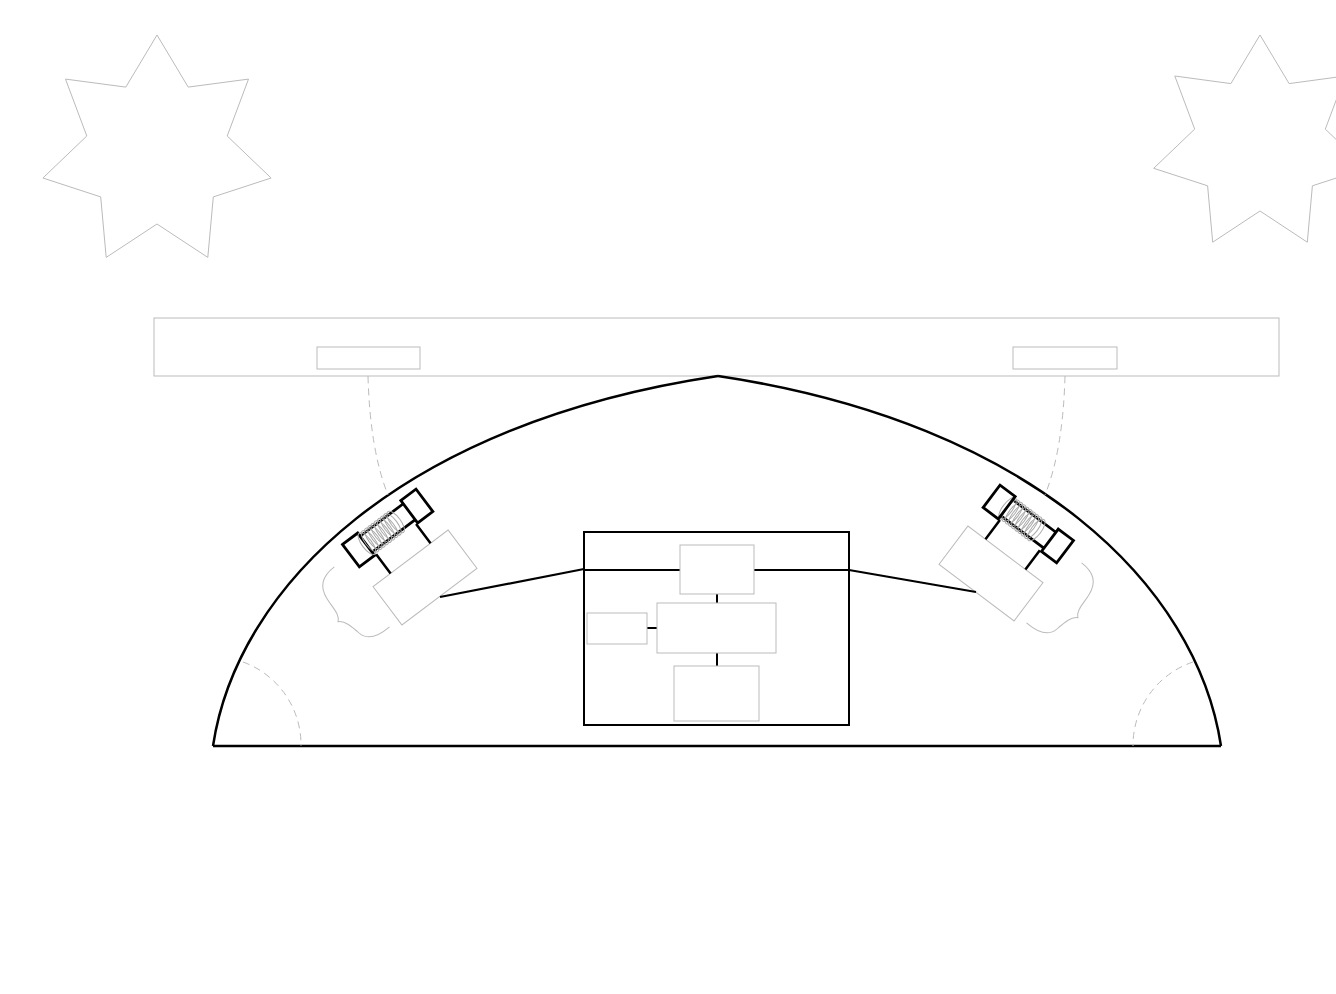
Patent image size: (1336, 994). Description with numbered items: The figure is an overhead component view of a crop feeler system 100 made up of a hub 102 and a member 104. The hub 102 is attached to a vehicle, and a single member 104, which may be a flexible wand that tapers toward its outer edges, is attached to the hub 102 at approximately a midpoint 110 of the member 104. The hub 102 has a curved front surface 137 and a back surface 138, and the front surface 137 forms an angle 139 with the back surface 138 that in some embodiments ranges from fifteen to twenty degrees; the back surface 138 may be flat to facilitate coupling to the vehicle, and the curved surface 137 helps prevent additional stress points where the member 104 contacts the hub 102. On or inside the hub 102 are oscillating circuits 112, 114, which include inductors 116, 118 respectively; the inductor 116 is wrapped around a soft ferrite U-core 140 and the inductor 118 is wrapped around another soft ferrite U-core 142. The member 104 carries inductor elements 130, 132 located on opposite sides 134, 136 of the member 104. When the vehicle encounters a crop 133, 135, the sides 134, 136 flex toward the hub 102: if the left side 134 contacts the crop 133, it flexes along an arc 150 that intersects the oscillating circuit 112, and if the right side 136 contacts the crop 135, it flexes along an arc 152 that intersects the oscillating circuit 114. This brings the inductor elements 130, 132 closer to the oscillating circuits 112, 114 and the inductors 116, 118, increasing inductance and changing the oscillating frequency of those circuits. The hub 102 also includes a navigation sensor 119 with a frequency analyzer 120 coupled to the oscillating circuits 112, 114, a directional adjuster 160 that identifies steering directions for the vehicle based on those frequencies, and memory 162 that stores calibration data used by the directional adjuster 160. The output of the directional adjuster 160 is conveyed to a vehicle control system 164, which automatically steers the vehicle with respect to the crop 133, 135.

The crop feeler system 100 is at (682, 137).
The hub 102 is at (724, 590).
The member 104 is at (811, 367).
The midpoint 110 is at (716, 317).
The oscillating circuit 112 is at (390, 572).
The oscillating circuit 114 is at (1027, 573).
The inductor 116 is at (380, 534).
The inductor 118 is at (1034, 528).
The navigation sensor 119 is at (716, 604).
The frequency analyzer 120 is at (697, 582).
The inductor element 130 is at (412, 358).
The inductor element 132 is at (1110, 358).
The crop 133 is at (136, 157).
The left side 134 is at (231, 306).
The crop 135 is at (1241, 157).
The right side 136 is at (1175, 305).
The curved front surface 137 is at (297, 573).
The back surface 138 is at (998, 746).
The angle 139 is at (255, 660).
The soft ferrite U-core 140 is at (448, 498).
The soft ferrite U-core 142 is at (963, 491).
The arc 150 is at (372, 433).
The arc 152 is at (1063, 438).
The directional adjuster 160 is at (697, 641).
The memory 162 is at (597, 641).
The vehicle control system 164 is at (697, 706).